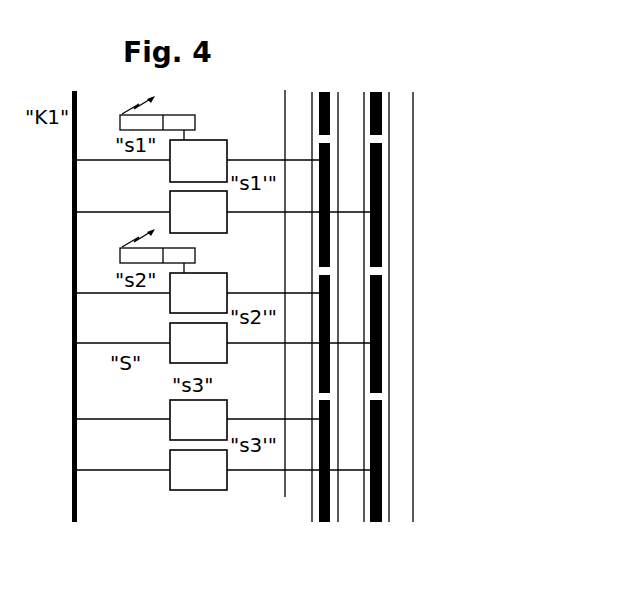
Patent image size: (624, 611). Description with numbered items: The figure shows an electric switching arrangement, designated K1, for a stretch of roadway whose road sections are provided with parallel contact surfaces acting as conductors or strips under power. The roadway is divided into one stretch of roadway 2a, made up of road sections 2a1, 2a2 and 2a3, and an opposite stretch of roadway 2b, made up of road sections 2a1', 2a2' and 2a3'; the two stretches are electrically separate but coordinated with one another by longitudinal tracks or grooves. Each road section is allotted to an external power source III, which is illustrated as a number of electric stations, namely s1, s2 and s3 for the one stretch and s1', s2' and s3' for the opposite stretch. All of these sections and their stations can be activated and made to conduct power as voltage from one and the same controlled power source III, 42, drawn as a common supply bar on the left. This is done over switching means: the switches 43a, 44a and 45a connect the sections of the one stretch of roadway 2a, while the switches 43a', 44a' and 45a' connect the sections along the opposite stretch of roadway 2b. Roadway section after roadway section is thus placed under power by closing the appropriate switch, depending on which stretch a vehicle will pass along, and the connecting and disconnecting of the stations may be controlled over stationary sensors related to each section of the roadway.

The stretch of roadway 2a is at (325, 92).
The opposite stretch of roadway 2b is at (386, 115).
The road section 2a1 is at (281, 189).
The road section 2a1' is at (429, 205).
The road section 2a2 is at (281, 318).
The road section 2a2' is at (427, 334).
The road section 2a3 is at (281, 448).
The road section 2a3' is at (425, 461).
The controlled power source 42 is at (72, 228).
The external power source III is at (72, 260).
The switch 43a is at (198, 163).
The switch 43a' is at (223, 210).
The switch 44a is at (198, 296).
The switch 44a' is at (223, 340).
The switch 45a is at (198, 414).
The switch 45a' is at (223, 464).